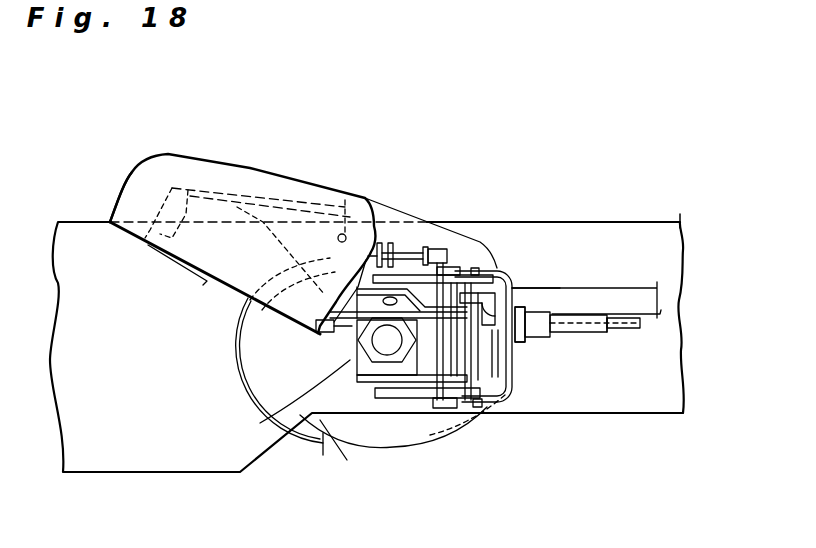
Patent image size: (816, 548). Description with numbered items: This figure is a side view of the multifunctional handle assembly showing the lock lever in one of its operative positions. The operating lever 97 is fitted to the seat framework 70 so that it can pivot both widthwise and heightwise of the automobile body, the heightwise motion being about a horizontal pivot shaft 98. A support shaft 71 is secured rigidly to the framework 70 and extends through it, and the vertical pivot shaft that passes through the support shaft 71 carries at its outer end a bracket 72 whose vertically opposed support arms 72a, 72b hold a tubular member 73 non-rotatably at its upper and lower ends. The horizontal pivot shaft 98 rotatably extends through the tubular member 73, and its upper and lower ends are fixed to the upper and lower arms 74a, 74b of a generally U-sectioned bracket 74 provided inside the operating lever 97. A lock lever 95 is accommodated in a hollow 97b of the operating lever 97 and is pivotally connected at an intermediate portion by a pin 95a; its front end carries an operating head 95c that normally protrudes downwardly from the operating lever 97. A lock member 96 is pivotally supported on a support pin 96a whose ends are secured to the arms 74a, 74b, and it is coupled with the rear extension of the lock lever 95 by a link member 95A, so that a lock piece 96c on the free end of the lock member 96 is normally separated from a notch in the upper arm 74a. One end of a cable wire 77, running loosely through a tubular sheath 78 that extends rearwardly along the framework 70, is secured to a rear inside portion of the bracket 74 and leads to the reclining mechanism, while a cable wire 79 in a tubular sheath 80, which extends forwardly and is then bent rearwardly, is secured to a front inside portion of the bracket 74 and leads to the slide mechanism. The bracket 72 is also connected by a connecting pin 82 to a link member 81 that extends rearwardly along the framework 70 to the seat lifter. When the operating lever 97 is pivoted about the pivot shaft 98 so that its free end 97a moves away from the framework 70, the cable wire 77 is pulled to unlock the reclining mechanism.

The seat framework 70 is at (668, 214).
The support shaft 71 is at (360, 405).
The bracket 72 is at (260, 423).
The support arm 72a is at (595, 256).
The support arm 72b is at (427, 396).
The tubular member 73 is at (393, 370).
The bracket 74 is at (511, 383).
The upper arm 74a is at (463, 275).
The lower arm 74b is at (478, 410).
The cable wire 77 is at (630, 333).
The tubular sheath 78 is at (590, 336).
The cable wire 79 is at (230, 370).
The tubular sheath 80 is at (300, 287).
The link member 81 is at (637, 293).
The connecting pin 82 is at (410, 262).
The lock lever 95 is at (246, 233).
The link member 95A is at (335, 337).
The pin 95a is at (345, 236).
The operating head 95c is at (195, 273).
The lock member 96 is at (532, 262).
The support pin 96a is at (477, 356).
The lock piece 96c is at (513, 273).
The operating lever 97 is at (297, 176).
The free end 97a is at (128, 172).
The hollow 97b is at (186, 184).
The horizontal pivot shaft 98 is at (408, 385).